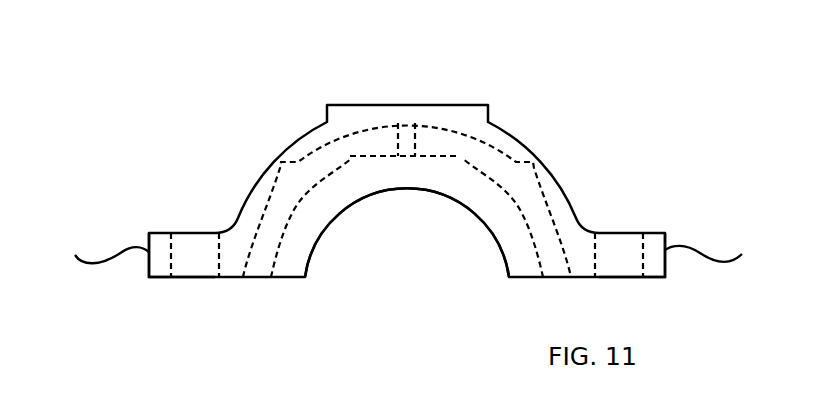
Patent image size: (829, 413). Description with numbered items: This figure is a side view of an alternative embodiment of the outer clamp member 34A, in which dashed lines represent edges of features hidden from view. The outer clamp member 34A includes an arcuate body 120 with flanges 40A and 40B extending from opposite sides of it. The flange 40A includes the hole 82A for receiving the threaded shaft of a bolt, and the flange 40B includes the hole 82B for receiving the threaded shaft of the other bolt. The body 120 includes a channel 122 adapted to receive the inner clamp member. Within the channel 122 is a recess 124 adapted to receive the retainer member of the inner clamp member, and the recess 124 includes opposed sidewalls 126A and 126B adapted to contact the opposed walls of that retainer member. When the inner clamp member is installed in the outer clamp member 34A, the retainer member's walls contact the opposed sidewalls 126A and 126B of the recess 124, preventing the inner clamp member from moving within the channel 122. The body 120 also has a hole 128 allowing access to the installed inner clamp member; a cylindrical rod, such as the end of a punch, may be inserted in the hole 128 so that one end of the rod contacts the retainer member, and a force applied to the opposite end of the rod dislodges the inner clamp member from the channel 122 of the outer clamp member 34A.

The outer clamp member 34A is at (407, 194).
The arcuate body 120 is at (567, 197).
The channel 122 is at (280, 304).
The recess 124 is at (379, 184).
The sidewall 126A is at (465, 158).
The sidewall 126B is at (349, 158).
The hole 128 is at (409, 92).
The hole 82A is at (621, 209).
The hole 82B is at (193, 209).
The flange 40A is at (726, 256).
The flange 40B is at (88, 255).